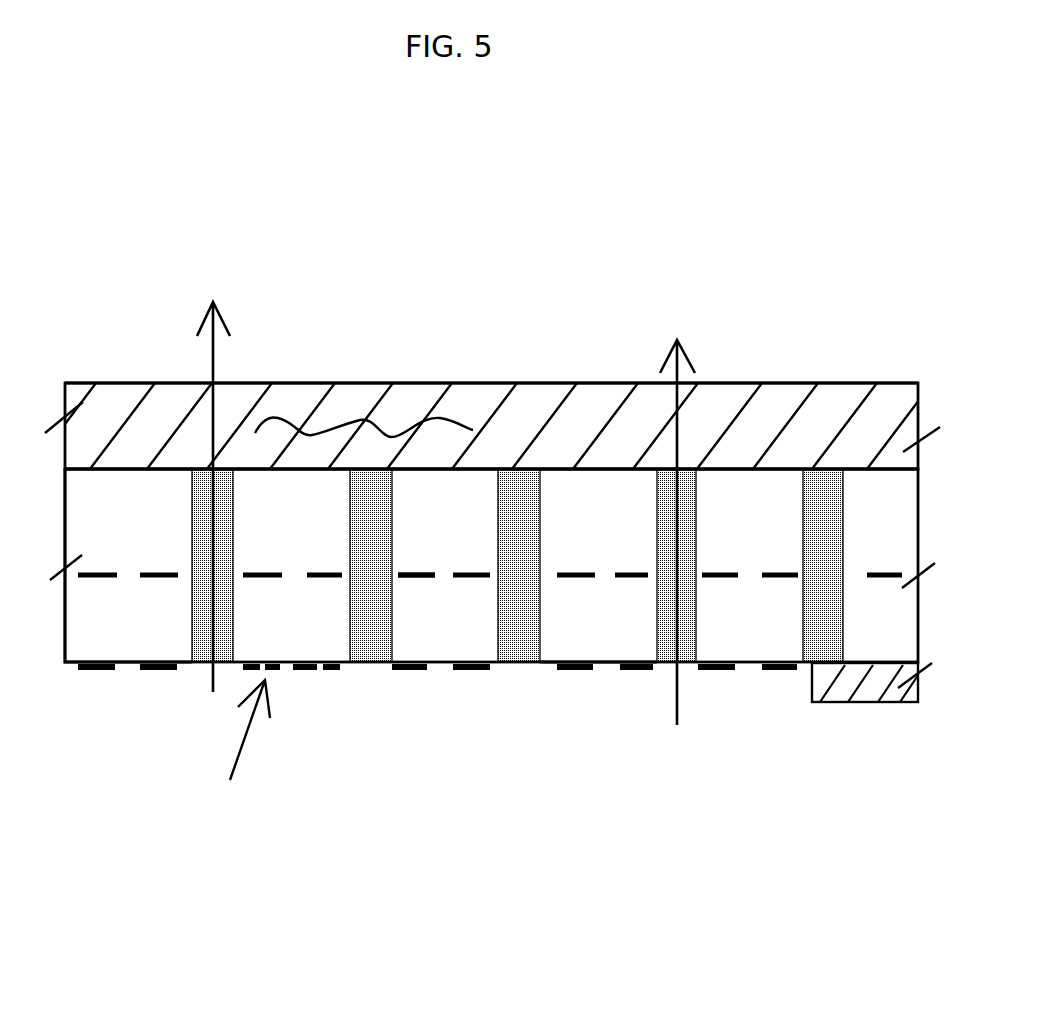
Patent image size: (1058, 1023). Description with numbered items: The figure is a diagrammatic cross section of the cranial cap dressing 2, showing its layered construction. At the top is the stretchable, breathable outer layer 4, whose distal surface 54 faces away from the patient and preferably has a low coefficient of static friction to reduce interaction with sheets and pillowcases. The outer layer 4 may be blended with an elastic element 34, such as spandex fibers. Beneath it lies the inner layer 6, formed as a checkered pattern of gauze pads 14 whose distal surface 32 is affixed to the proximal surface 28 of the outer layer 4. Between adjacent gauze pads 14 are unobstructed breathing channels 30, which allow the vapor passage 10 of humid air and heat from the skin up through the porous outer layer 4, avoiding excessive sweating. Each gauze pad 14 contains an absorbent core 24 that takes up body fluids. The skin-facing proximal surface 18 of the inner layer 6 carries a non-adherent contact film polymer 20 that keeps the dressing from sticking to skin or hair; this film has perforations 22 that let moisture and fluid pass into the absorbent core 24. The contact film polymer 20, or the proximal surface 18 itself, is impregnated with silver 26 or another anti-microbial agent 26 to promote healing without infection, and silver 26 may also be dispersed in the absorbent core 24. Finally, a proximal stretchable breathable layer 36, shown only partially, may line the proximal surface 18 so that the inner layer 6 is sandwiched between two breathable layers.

The cranial cap dressing 2 is at (676, 205).
The outer layer 4 is at (585, 417).
The distal surface 54 is at (468, 383).
The elastic element 34 is at (338, 422).
The proximal surface of the outer layer 28 is at (125, 470).
The distal surface of the inner layer 32 is at (181, 460).
The absorbent core 24 is at (767, 547).
The silver 26 is at (413, 573).
The breathing channels 30 is at (233, 647).
The gauze pads 14 is at (150, 630).
The proximal surface of the inner layer 18 is at (443, 668).
The contact film polymer 20 is at (406, 667).
The inner layer 6 is at (558, 638).
The vapor passage 10 is at (217, 355).
The perforations 22 is at (241, 752).
The proximal stretchable breathable layer 36 is at (887, 705).